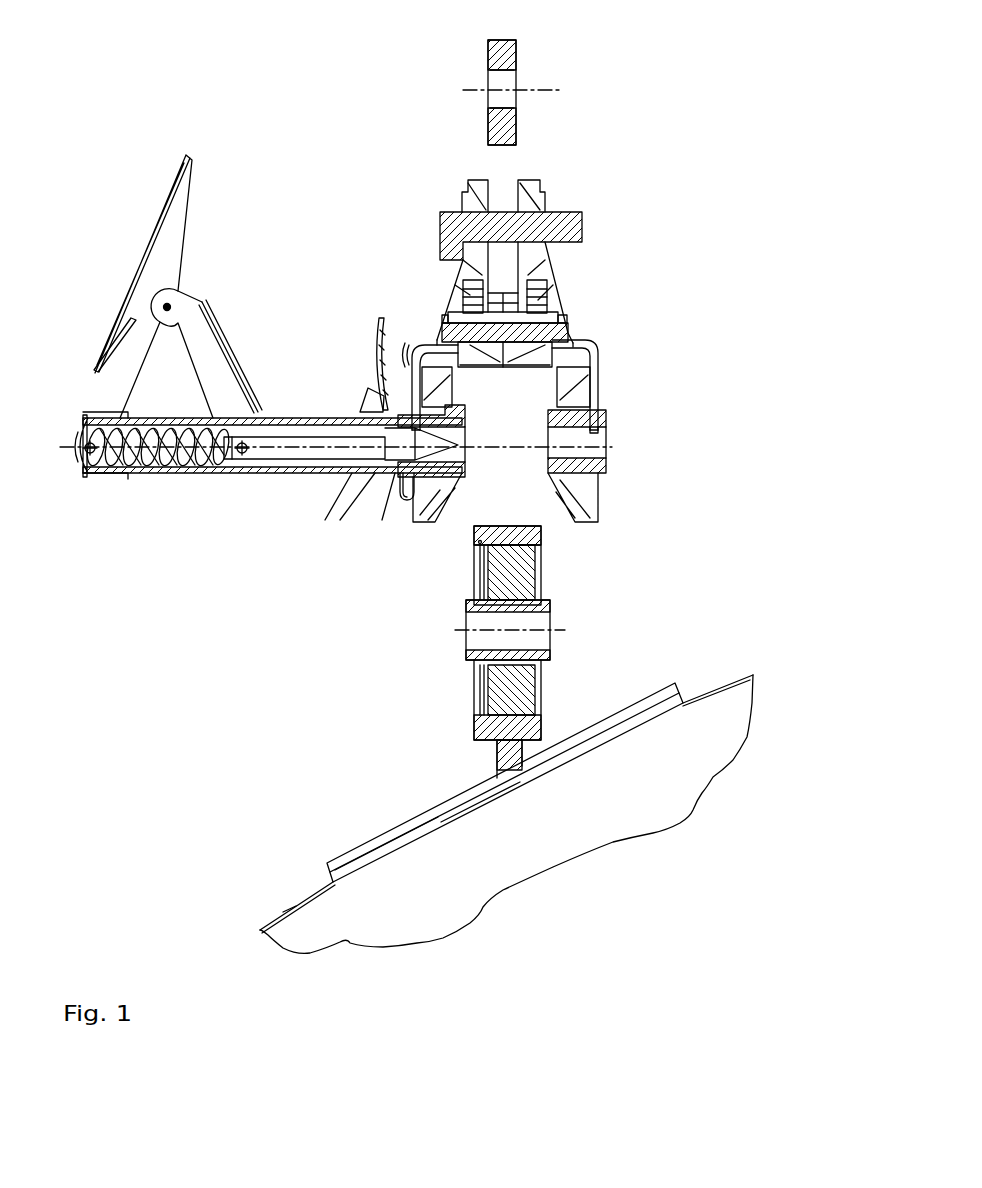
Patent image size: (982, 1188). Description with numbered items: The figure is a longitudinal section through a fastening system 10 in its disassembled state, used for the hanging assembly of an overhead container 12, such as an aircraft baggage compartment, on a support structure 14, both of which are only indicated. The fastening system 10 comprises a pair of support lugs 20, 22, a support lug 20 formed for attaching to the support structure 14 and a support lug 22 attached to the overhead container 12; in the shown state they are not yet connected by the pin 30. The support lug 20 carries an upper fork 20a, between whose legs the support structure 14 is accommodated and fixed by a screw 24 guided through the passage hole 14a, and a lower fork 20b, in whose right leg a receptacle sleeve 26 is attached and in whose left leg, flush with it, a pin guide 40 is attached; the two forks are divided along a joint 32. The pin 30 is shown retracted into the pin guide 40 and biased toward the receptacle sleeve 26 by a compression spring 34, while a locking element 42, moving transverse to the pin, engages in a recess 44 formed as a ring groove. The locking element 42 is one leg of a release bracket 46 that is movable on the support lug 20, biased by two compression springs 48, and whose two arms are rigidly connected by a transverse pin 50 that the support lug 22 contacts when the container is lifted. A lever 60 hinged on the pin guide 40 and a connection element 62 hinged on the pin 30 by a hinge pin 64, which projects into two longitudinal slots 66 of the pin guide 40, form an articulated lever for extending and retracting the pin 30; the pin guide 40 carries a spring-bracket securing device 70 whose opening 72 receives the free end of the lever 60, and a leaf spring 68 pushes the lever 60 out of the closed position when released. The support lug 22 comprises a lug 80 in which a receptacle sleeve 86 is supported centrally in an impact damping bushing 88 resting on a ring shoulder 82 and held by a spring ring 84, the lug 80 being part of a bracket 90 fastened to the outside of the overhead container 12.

The fastening system 10 is at (266, 102).
The overhead container 12 is at (740, 730).
The support structure 14 is at (516, 47).
The passage hole 14a is at (510, 82).
The support lug 20 is at (592, 298).
The upper fork 20a is at (556, 184).
The lower fork 20b is at (606, 487).
The support lug 22 is at (570, 575).
The screw 24 is at (583, 222).
The receptacle sleeve 26 is at (585, 428).
The pin 30 is at (345, 472).
The joint 32 is at (555, 331).
The compression spring 34 is at (108, 482).
The pin guide 40 is at (166, 482).
The locking element 42 is at (412, 345).
The recess 44 is at (408, 507).
The release bracket 46 is at (596, 372).
The compression springs 48 is at (560, 302).
The transverse pin 50 is at (525, 342).
The lever 60 is at (178, 229).
The connection element 62 is at (213, 351).
The hinge pin 64 is at (246, 472).
The longitudinal slots 66 is at (290, 462).
The leaf spring 68 is at (118, 352).
The securing device 70 is at (376, 360).
The opening 72 is at (360, 404).
The lug 80 is at (542, 680).
The ring shoulder 82 is at (543, 546).
The spring ring 84 is at (482, 547).
The receptacle sleeve 86 is at (553, 608).
The impact damping bushing 88 is at (560, 700).
The bracket 90 is at (432, 810).